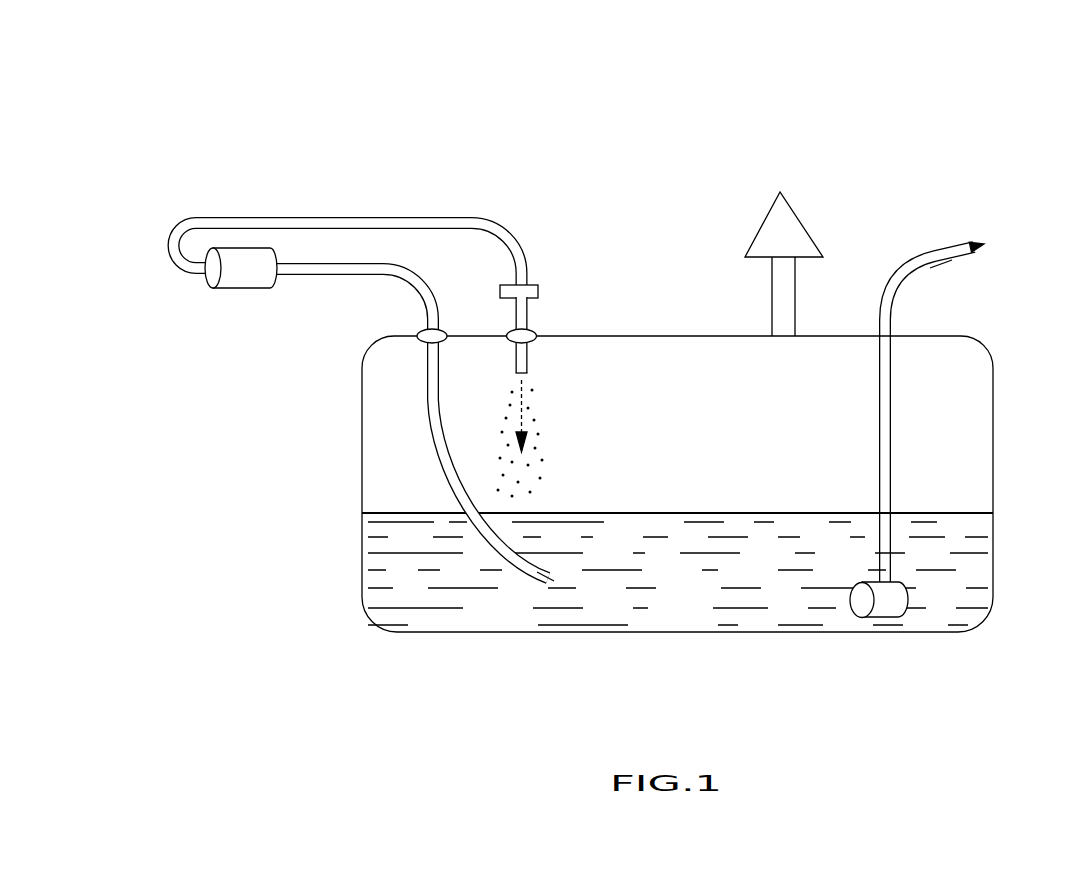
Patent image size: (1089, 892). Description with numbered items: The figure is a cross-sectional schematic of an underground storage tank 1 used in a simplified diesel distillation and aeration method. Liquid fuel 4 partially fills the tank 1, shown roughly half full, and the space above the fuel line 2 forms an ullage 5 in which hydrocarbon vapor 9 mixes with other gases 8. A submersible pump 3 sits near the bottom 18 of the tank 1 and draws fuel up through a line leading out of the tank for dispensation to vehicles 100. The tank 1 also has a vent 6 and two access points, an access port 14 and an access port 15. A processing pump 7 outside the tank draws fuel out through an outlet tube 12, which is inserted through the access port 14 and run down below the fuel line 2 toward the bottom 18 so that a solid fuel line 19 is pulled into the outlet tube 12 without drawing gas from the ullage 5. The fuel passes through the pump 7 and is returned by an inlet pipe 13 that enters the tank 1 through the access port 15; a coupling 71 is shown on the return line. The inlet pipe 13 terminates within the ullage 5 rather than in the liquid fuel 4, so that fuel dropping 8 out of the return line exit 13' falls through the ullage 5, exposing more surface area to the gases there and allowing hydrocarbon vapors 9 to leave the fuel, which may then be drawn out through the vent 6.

The underground storage tank 1 is at (1022, 425).
The fuel line 2 is at (975, 513).
The submersible pump 3 is at (885, 618).
The liquid fuel 4 is at (755, 594).
The ullage 5 is at (752, 444).
The vent 6 is at (803, 225).
The processing pump 7 is at (247, 290).
The other gases / fuel dropping 8 is at (532, 407).
The hydrocarbon vapor 9 is at (540, 438).
The outlet tube 12 is at (437, 455).
The inlet pipe 13 is at (556, 326).
The return line outlet 13' is at (493, 385).
The access port 14 is at (428, 217).
The access port 15 is at (512, 330).
The bottom 18 is at (697, 634).
The solid fuel line 19 is at (437, 410).
The fitting 71 is at (532, 282).
The vehicles 100 is at (938, 250).